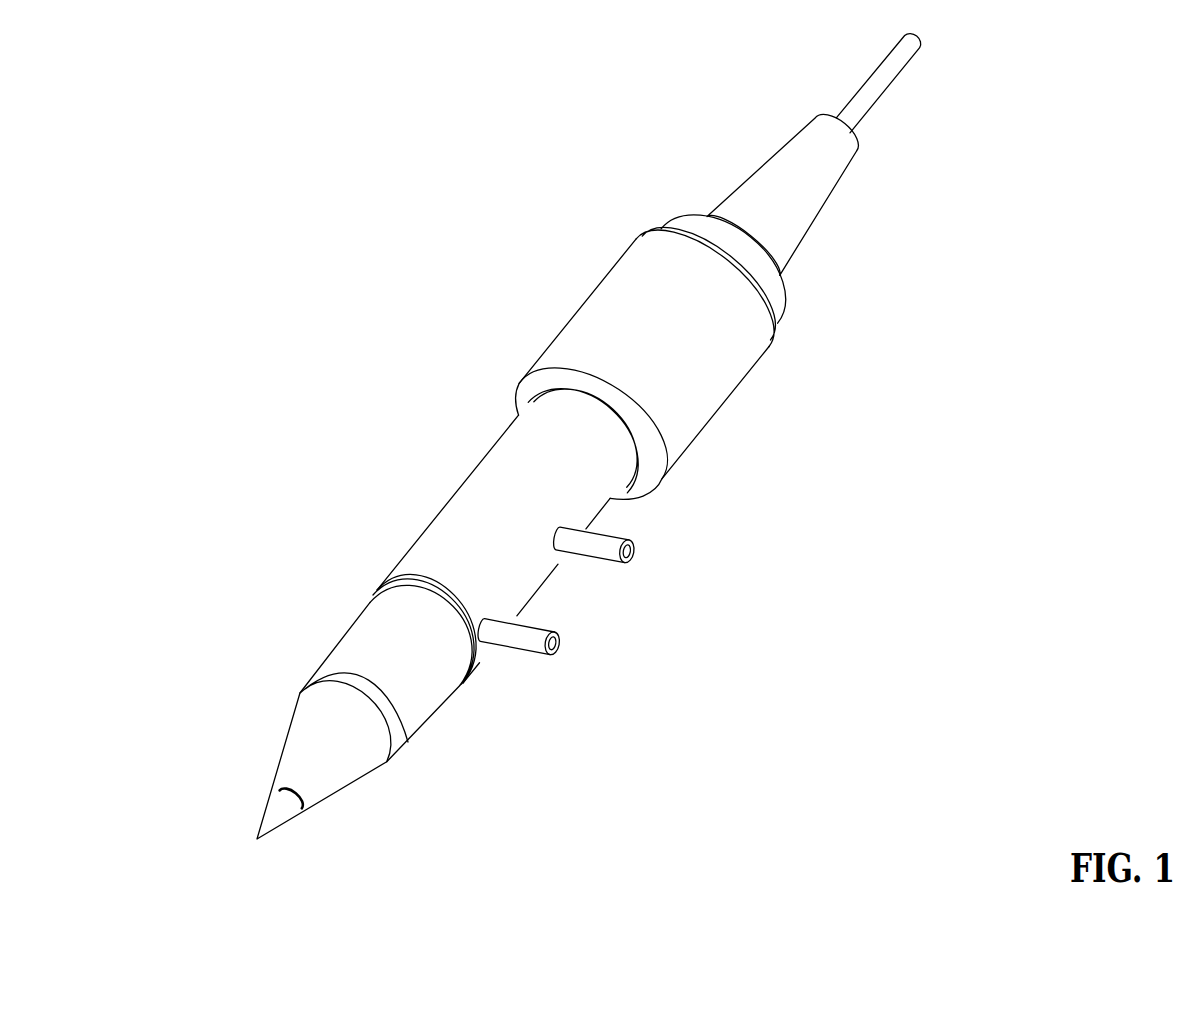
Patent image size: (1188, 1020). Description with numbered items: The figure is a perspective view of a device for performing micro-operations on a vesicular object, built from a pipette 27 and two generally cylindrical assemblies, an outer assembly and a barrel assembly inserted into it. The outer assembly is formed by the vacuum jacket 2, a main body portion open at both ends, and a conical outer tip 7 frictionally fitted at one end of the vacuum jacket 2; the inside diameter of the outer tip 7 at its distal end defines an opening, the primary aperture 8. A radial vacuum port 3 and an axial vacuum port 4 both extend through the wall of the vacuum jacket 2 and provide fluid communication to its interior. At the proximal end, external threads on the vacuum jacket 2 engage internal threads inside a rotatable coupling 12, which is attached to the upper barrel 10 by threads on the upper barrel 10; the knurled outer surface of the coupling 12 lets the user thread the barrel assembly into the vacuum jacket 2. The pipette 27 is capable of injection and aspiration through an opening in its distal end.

The vacuum jacket 2 is at (477, 522).
The radial vacuum port 3 is at (528, 640).
The axial vacuum port 4 is at (605, 557).
The outer tip 7 is at (310, 735).
The primary aperture 8 is at (258, 840).
The upper barrel 10 is at (783, 212).
The rotatable coupling 12 is at (620, 322).
The pipette 27 is at (873, 90).